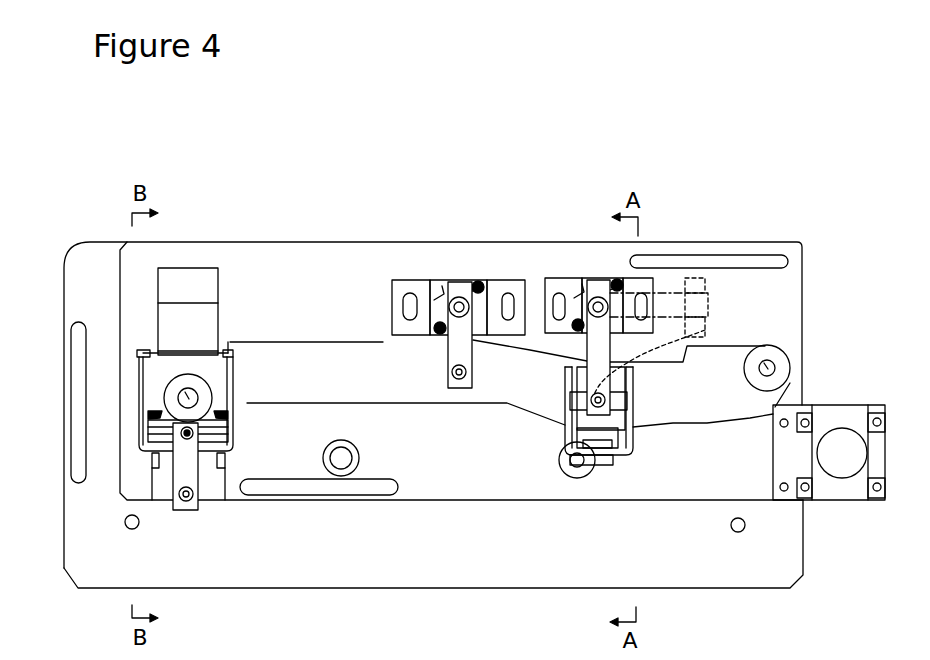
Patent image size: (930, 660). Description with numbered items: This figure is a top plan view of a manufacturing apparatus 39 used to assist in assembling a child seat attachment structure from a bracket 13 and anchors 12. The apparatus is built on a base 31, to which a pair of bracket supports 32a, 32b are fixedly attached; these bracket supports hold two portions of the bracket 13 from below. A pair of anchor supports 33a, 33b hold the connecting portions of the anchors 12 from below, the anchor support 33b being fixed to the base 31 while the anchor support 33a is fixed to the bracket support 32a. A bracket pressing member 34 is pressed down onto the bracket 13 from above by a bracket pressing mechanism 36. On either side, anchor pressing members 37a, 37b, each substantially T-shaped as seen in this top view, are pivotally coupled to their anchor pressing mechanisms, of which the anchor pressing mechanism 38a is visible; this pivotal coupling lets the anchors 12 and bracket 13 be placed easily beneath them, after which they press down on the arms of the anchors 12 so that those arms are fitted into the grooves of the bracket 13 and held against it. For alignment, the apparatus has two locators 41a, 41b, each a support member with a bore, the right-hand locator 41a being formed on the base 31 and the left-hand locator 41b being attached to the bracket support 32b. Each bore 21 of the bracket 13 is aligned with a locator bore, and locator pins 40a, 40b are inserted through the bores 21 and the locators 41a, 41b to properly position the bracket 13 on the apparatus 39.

The anchor 12 is at (147, 412).
The bracket 13 is at (358, 368).
The bore 21 is at (186, 398).
The base 31 is at (389, 589).
The bracket support 32a is at (687, 332).
The bracket support 32b is at (205, 325).
The anchor support 33a is at (603, 467).
The anchor support 33b is at (153, 457).
The bracket pressing member 34 is at (460, 353).
The bracket pressing mechanism 36 is at (463, 280).
The anchor pressing member 37a is at (587, 347).
The anchor pressing member 37b is at (193, 483).
The anchor pressing mechanism 38a is at (597, 278).
The manufacturing apparatus 39 is at (581, 270).
The locator pin 40a is at (812, 359).
The locator pin 40b is at (204, 296).
The locator 41a is at (768, 363).
The locator 41b is at (190, 372).